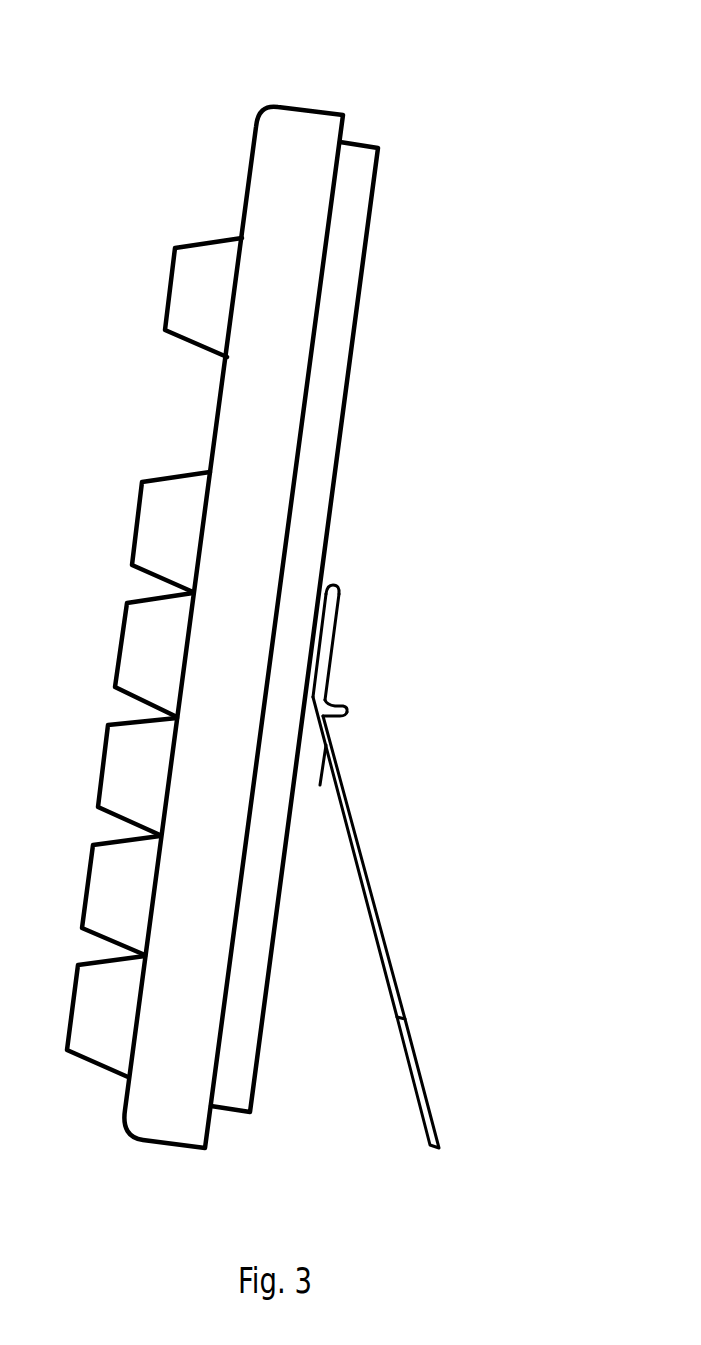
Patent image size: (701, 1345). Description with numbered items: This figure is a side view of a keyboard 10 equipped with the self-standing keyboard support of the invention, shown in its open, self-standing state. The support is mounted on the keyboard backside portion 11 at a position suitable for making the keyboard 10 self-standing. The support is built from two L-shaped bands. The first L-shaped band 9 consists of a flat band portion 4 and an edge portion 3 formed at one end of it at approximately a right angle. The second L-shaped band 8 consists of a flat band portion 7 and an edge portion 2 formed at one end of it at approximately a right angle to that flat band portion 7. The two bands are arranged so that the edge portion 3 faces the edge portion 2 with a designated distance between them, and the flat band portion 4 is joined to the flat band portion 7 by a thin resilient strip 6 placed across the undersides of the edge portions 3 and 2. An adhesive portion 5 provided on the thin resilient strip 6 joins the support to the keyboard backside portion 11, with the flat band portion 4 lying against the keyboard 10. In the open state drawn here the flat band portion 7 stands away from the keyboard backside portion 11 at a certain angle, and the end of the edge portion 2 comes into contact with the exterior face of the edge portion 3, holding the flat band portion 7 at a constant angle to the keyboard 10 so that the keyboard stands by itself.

The keyboard 10 is at (340, 109).
The keyboard backside portion 11 is at (342, 294).
The L-shaped band 9 is at (414, 820).
The adhesive portion 5 is at (323, 590).
The flat band portion 4 is at (340, 596).
The edge portion 3 is at (345, 702).
The edge portion 2 is at (343, 711).
The L-shaped band 8 is at (390, 953).
The flat band portion 7 is at (405, 1013).
The thin resilient strip 6 is at (322, 766).